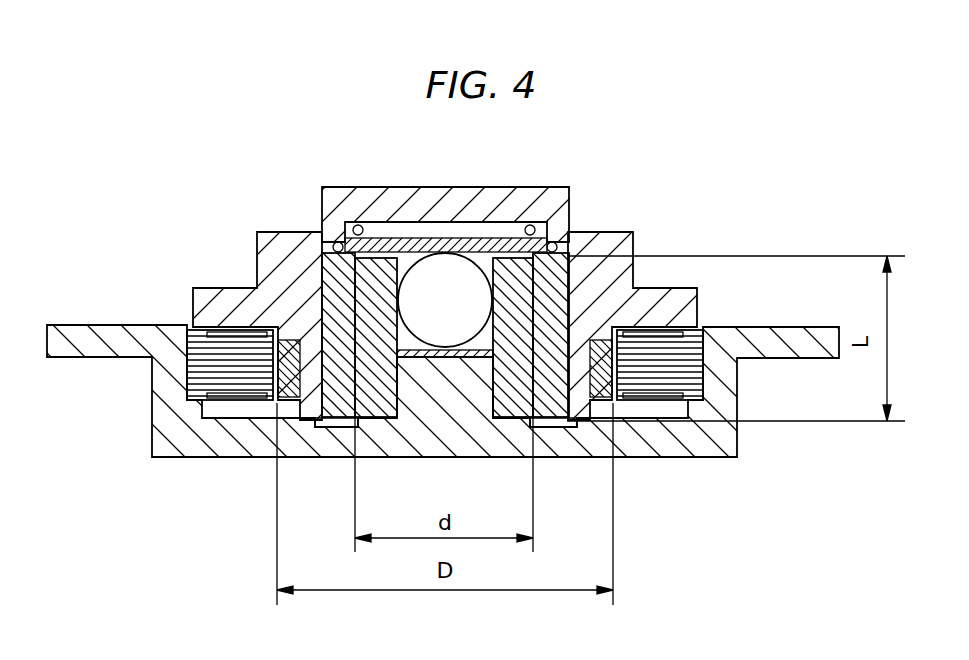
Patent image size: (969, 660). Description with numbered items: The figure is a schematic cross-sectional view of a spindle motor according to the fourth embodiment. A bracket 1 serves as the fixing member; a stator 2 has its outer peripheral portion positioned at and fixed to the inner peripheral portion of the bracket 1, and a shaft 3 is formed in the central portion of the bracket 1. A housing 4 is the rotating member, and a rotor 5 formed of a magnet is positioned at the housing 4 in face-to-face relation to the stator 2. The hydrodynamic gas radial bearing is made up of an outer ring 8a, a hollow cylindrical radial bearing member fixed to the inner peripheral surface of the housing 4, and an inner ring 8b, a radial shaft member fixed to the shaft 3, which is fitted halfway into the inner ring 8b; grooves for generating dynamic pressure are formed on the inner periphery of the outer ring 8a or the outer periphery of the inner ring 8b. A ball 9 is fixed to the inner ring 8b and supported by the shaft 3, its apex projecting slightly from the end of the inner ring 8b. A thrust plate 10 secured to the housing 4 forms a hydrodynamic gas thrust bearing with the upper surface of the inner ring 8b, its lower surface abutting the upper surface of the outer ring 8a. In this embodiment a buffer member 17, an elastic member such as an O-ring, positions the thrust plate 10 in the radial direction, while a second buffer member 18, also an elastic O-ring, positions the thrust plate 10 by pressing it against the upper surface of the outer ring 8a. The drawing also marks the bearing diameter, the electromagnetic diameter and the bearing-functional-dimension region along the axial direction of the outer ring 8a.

The bracket 1 is at (783, 352).
The stator 2 is at (222, 385).
The shaft 3 is at (428, 400).
The housing 4 is at (490, 215).
The rotor 5 is at (296, 385).
The outer ring 8a is at (347, 405).
The inner ring 8b is at (383, 400).
The ball 9 is at (443, 258).
The thrust plate 10 is at (400, 245).
The buffer member 17 is at (333, 244).
The buffer member 18 is at (358, 225).